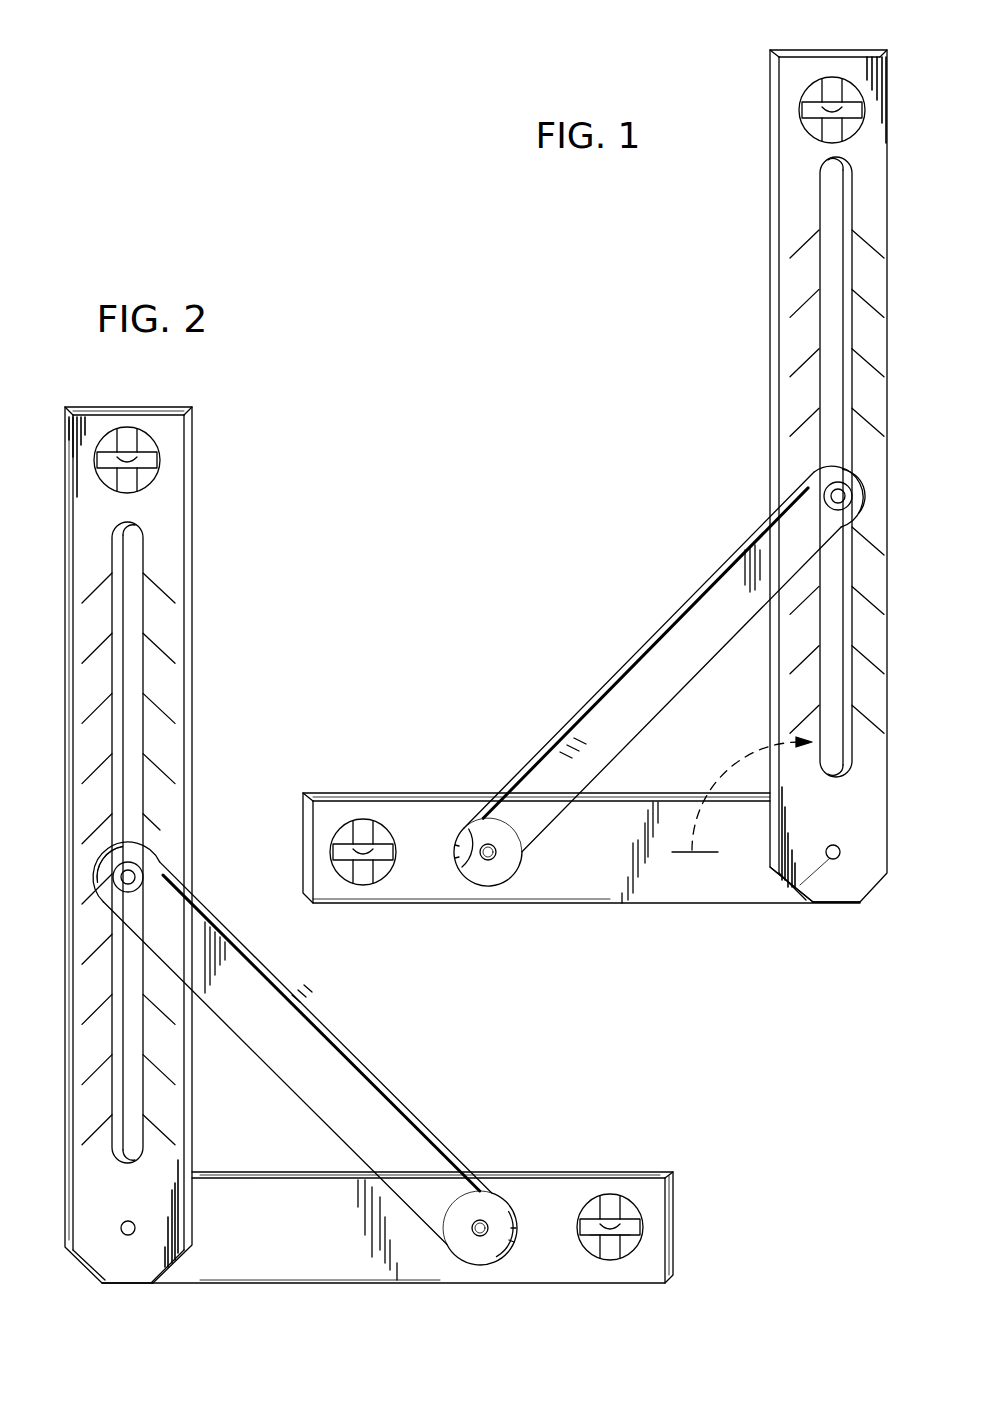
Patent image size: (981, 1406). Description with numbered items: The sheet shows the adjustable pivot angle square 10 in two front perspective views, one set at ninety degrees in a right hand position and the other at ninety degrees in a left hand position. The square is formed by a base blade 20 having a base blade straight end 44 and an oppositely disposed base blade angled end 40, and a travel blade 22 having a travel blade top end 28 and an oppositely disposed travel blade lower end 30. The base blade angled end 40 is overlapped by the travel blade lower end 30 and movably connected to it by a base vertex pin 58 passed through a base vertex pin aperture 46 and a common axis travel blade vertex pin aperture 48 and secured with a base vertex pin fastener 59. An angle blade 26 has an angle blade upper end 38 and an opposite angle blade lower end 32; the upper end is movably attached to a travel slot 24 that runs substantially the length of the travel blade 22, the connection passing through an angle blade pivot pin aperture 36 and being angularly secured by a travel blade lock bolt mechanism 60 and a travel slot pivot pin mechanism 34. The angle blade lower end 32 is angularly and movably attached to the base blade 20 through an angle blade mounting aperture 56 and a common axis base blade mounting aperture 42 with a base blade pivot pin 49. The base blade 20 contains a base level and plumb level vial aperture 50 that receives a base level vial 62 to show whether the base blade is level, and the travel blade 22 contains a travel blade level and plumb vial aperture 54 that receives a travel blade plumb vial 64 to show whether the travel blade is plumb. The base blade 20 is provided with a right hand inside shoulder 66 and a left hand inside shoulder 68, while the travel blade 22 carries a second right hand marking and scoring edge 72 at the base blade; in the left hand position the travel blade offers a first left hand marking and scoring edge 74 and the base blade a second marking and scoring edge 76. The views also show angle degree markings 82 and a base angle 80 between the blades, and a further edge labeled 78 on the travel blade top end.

In FIG. 1, the adjustable pivot angle square 10 is at (710, 162).
In FIG. 2, the adjustable pivot angle square 10 is at (252, 418).
In FIG. 1, the base blade 20 is at (546, 877).
In FIG. 2, the base blade 20 is at (272, 1255).
In FIG. 1, the travel blade 22 is at (823, 823).
In FIG. 2, the travel blade 22 is at (96, 1208).
In FIG. 2, the travel slot 24 is at (186, 836).
In FIG. 1, the angle blade 26 is at (583, 758).
In FIG. 2, the angle blade 26 is at (303, 1097).
In FIG. 2, the travel blade top end 28 is at (119, 380).
In FIG. 1, the travel blade lower end 30 is at (836, 929).
In FIG. 2, the travel blade lower end 30 is at (119, 1325).
In FIG. 1, the angle blade lower end 32 is at (462, 877).
In FIG. 2, the angle blade lower end 32 is at (500, 1260).
In FIG. 1, the travel slot pivot pin mechanism 34 is at (781, 496).
In FIG. 1, the angle blade pivot pin aperture 36 is at (774, 473).
In FIG. 2, the angle blade pivot pin aperture 36 is at (178, 855).
In FIG. 2, the angle blade upper end 38 is at (170, 834).
In FIG. 2, the base blade angled end 40 is at (176, 1268).
In FIG. 1, the base blade mounting aperture 42 is at (505, 855).
In FIG. 2, the base blade mounting aperture 42 is at (523, 1188).
In FIG. 2, the base blade straight end 44 is at (712, 1225).
In FIG. 1, the base vertex pin aperture 46 is at (800, 885).
In FIG. 2, the travel blade vertex pin aperture 48 is at (84, 1268).
In FIG. 1, the base blade pivot pin 49 is at (486, 862).
In FIG. 2, the base blade pivot pin 49 is at (440, 1279).
In FIG. 1, the base level and plumb level vial aperture 50 is at (360, 882).
In FIG. 2, the base level and plumb level vial aperture 50 is at (609, 1268).
In FIG. 1, the travel blade level and plumb vial aperture 54 is at (803, 148).
In FIG. 1, the angle blade mounting aperture 56 is at (500, 860).
In FIG. 2, the angle blade mounting aperture 56 is at (478, 1278).
In FIG. 1, the base vertex pin 58 is at (840, 860).
In FIG. 1, the base vertex pin fastener 59 is at (800, 913).
In FIG. 2, the travel blade lock bolt mechanism 60 is at (168, 872).
In FIG. 2, the base level vial 62 is at (633, 1282).
In FIG. 2, the travel blade plumb vial 64 is at (151, 421).
In FIG. 1, the right hand inside shoulder 66 is at (541, 762).
In FIG. 2, the left hand inside shoulder 68 is at (430, 1140).
In FIG. 1, the second right hand marking and scoring edge 72 is at (660, 906).
In FIG. 2, the first left hand marking and scoring edge 74 is at (64, 762).
In FIG. 2, the second marking and scoring edge 76 is at (320, 1311).
In FIG. 1, the edge of second leg 78 is at (890, 88).
In FIG. 1, the base angle 80 is at (745, 756).
In FIG. 1, the angle degree markings 82 is at (802, 300).
In FIG. 2, the angle degree markings 82 is at (168, 855).